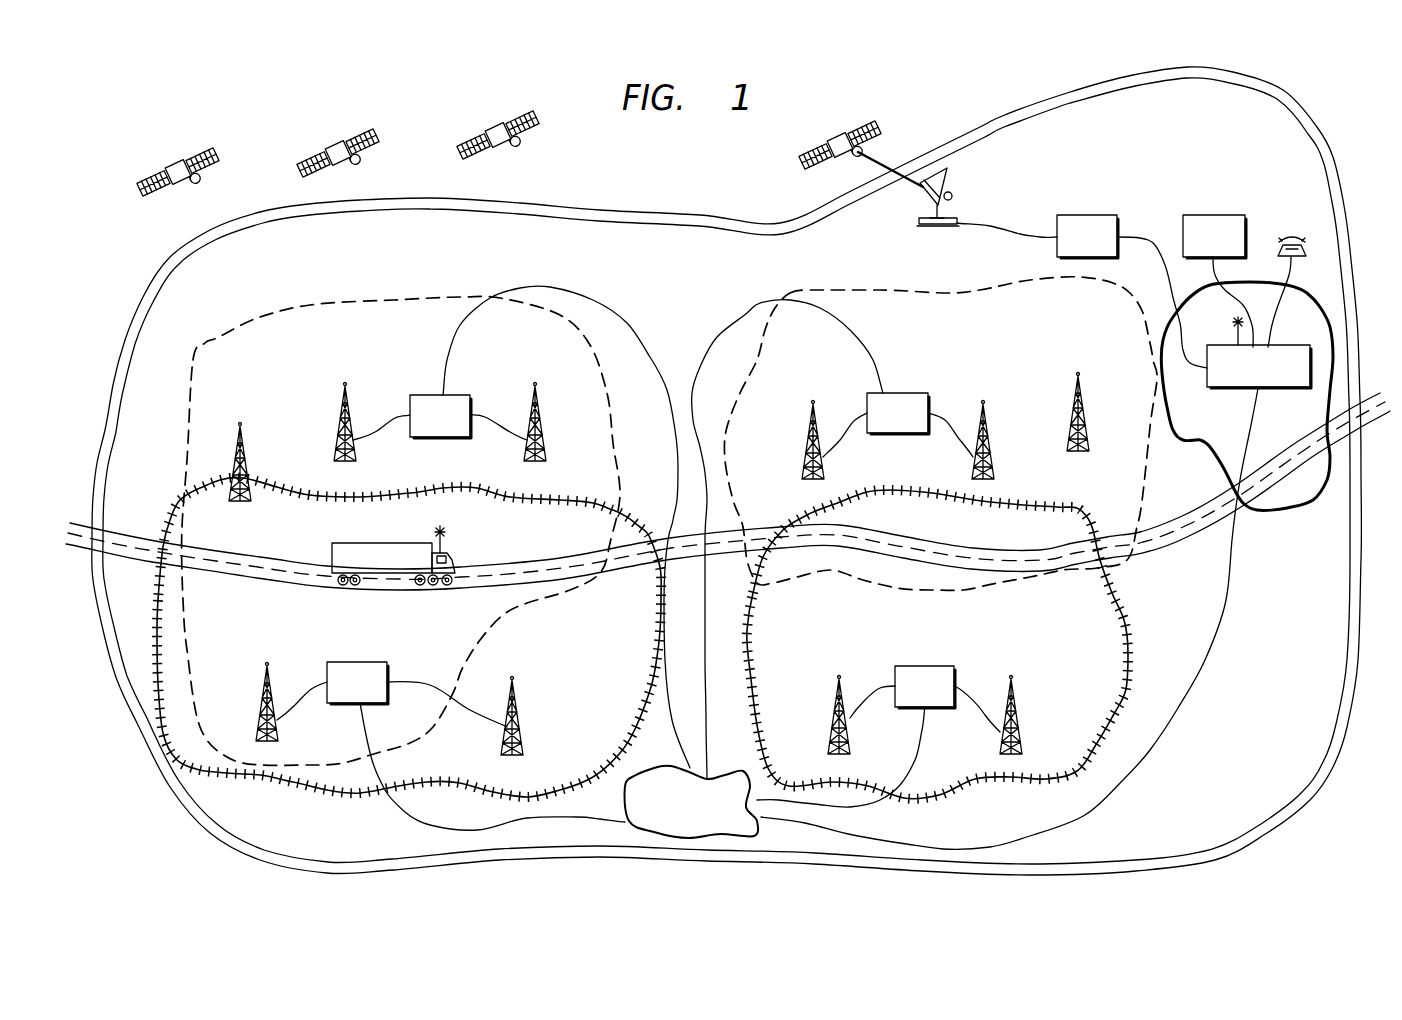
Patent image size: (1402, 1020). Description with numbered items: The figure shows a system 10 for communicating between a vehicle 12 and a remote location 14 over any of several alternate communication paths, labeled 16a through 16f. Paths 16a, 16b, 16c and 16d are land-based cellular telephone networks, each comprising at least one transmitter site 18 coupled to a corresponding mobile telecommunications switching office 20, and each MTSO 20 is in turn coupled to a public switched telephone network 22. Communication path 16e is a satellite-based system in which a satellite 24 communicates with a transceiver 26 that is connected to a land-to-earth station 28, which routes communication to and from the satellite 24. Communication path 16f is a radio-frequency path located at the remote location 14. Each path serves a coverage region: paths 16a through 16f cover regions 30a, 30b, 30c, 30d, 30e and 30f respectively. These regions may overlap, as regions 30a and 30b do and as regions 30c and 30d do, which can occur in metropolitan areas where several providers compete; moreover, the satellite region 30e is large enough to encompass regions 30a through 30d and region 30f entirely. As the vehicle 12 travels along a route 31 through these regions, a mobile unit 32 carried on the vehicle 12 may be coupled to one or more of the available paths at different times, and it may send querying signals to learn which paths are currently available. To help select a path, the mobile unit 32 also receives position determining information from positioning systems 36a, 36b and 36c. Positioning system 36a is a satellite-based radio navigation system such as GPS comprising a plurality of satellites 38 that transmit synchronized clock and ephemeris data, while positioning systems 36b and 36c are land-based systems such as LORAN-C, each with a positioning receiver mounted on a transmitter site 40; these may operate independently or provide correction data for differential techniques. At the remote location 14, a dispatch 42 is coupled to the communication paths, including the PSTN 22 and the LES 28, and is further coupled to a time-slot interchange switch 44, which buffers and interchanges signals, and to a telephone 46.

The system 10 is at (1309, 839).
The vehicle 12 is at (332, 560).
The remote location 14 is at (1048, 554).
The communication path 16a is at (436, 404).
The communication path 16b is at (357, 670).
The communication path 16c is at (925, 674).
The communication path 16d is at (903, 400).
The communication path 16e is at (886, 138).
The communication path 16f is at (1233, 333).
The transmitter site 18 is at (340, 427).
The mobile telecommunications switching office 20 is at (639, 537).
The public switched telephone network 22 is at (670, 772).
The satellite 24 is at (836, 133).
The transceiver 26 is at (953, 180).
The land-to-earth station 28 is at (1088, 215).
The coverage region 30a is at (400, 303).
The coverage region 30b is at (627, 642).
The coverage region 30c is at (960, 293).
The coverage region 30d is at (1095, 644).
The coverage region 30e is at (203, 812).
The coverage region 30f is at (1295, 499).
The route 31 is at (80, 521).
The mobile unit 32 is at (453, 567).
The positioning system 36a is at (278, 116).
The positioning system 36b is at (250, 460).
The positioning system 36c is at (1051, 412).
The satellite 38 is at (175, 163).
The transmitter site 40 is at (663, 457).
The dispatch 42 is at (1270, 390).
The time-slot interchange switch 44 is at (1213, 215).
The telephone 46 is at (1290, 234).